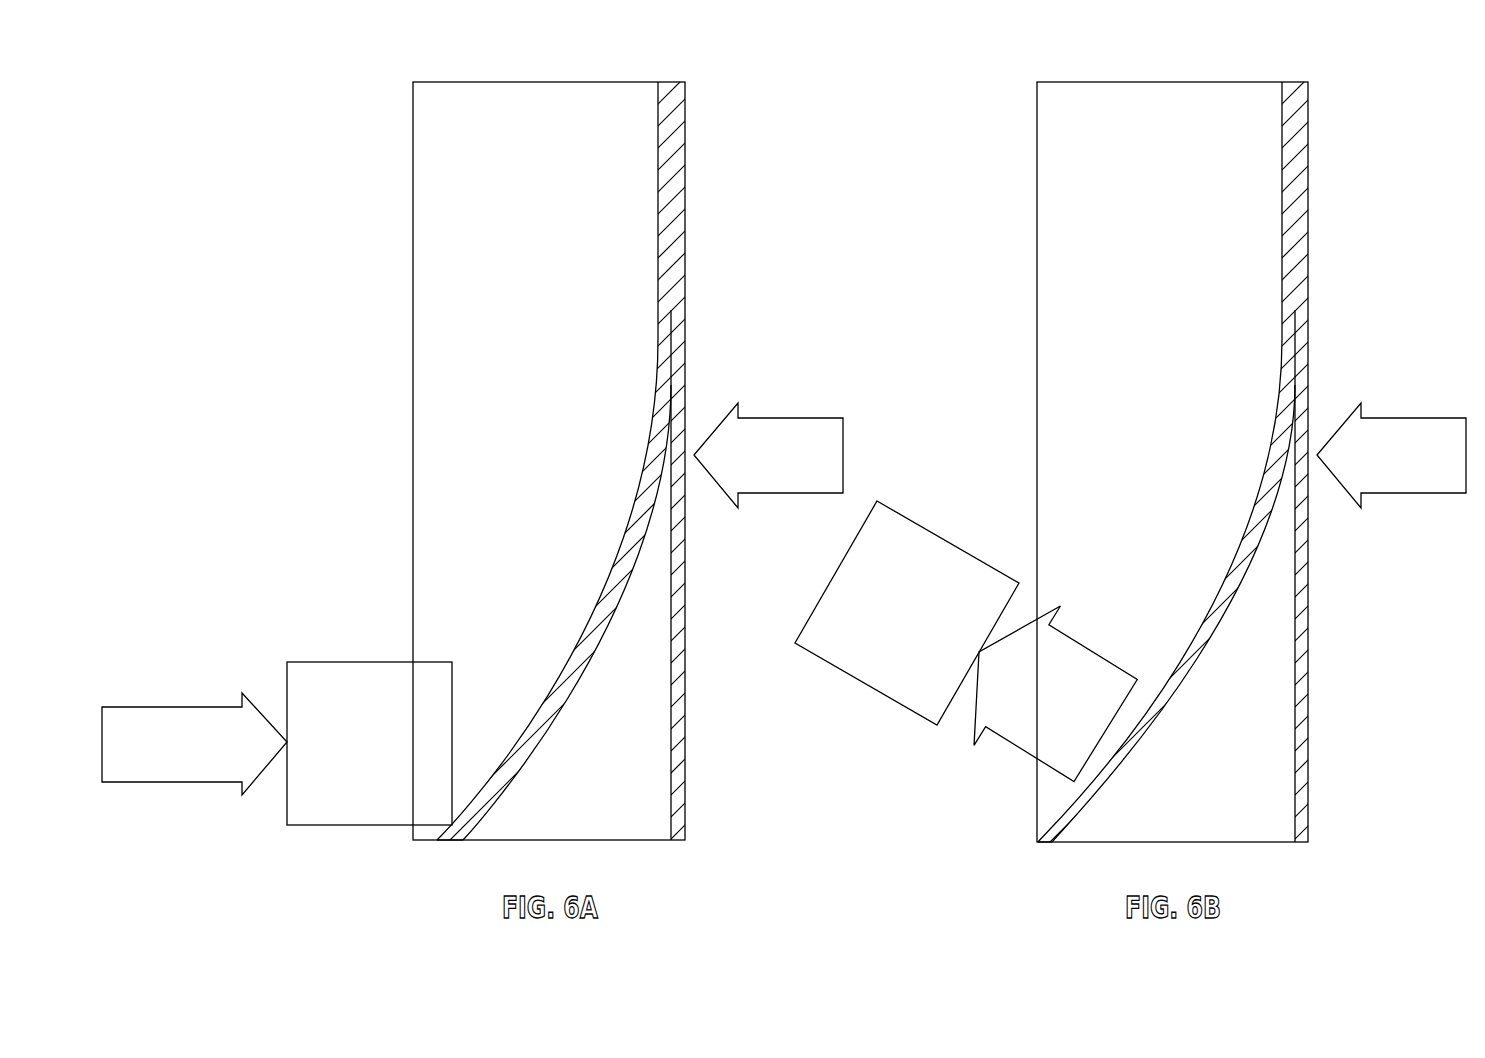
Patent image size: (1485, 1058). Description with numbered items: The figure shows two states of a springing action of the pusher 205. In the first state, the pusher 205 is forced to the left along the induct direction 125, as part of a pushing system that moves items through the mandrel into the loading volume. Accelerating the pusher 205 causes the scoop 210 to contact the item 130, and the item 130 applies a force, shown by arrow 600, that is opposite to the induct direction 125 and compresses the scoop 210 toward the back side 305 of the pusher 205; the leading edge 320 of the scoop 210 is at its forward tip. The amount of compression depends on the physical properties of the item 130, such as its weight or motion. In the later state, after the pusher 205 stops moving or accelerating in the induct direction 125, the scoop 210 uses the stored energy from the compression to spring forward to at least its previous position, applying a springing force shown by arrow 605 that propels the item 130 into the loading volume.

In FIG. 6A, the pusher 205 is at (494, 67).
In FIG. 6B, the pusher 205 is at (1118, 67).
In FIG. 6A, the back side 305 is at (686, 190).
In FIG. 6B, the back side 305 is at (1309, 190).
In FIG. 6A, the scoop 210 is at (555, 730).
In FIG. 6B, the scoop 210 is at (1153, 707).
In FIG. 6A, the leading edge 320 is at (463, 808).
In FIG. 6B, the leading edge 320 is at (1047, 825).
In FIG. 6A, the item 130 is at (352, 660).
In FIG. 6B, the item 130 is at (828, 670).
In FIG. 6A, the arrow 600 is at (192, 705).
In FIG. 6A, the induct direction 125 is at (818, 418).
In FIG. 6B, the induct direction 125 is at (1441, 418).
In FIG. 6B, the arrow 605 is at (1087, 647).